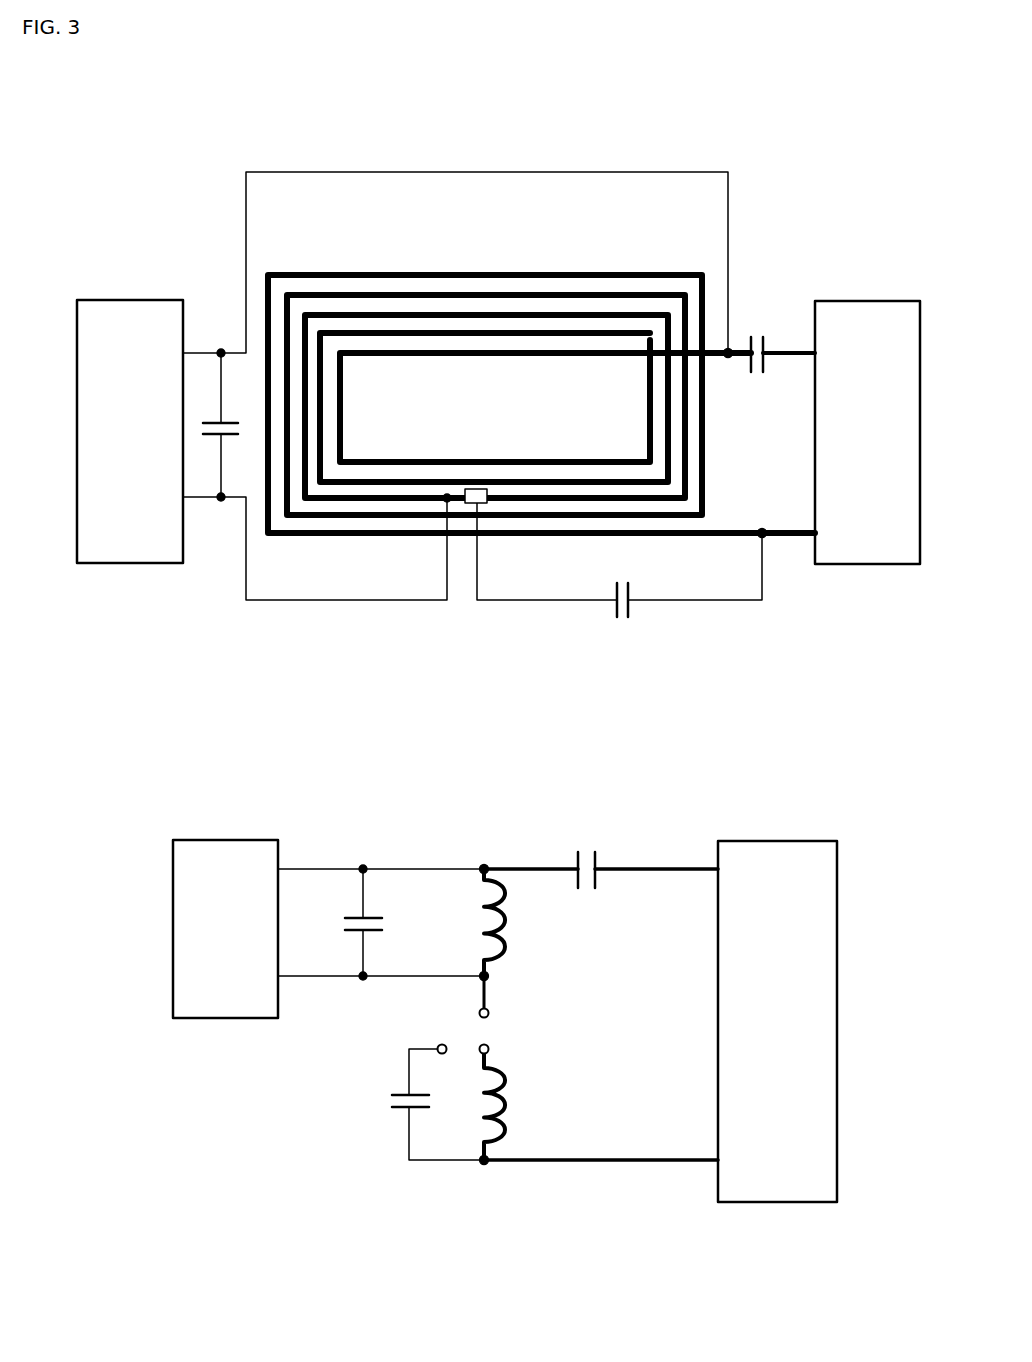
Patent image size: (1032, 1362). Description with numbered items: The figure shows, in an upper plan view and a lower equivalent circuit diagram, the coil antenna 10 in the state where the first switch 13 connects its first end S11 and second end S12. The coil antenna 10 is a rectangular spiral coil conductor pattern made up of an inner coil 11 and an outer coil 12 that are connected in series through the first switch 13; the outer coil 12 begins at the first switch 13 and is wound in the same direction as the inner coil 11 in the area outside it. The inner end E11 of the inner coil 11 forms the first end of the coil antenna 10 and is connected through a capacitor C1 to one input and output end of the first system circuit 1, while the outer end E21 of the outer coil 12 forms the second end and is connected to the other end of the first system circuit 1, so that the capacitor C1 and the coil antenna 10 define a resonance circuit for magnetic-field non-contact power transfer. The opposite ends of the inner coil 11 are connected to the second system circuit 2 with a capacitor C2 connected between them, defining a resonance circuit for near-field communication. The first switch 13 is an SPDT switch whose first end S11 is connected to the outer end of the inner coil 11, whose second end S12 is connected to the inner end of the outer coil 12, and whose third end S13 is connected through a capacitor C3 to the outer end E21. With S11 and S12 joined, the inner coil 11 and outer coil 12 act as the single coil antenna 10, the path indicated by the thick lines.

The first system circuit 1 is at (862, 301).
The second system circuit 2 is at (122, 300).
The coil antenna 10 is at (541, 682).
The inner coil 11 is at (449, 354).
The outer coil 12 is at (418, 272).
The first switch 13 is at (472, 489).
The capacitor C1 is at (649, 616).
The capacitor C2 is at (296, 664).
The capacitor C3 is at (501, 871).
The inner end E11 is at (626, 352).
The outer end E21 is at (710, 531).
The first end S11 is at (468, 997).
The second end S12 is at (503, 1049).
The third end S13 is at (438, 1016).